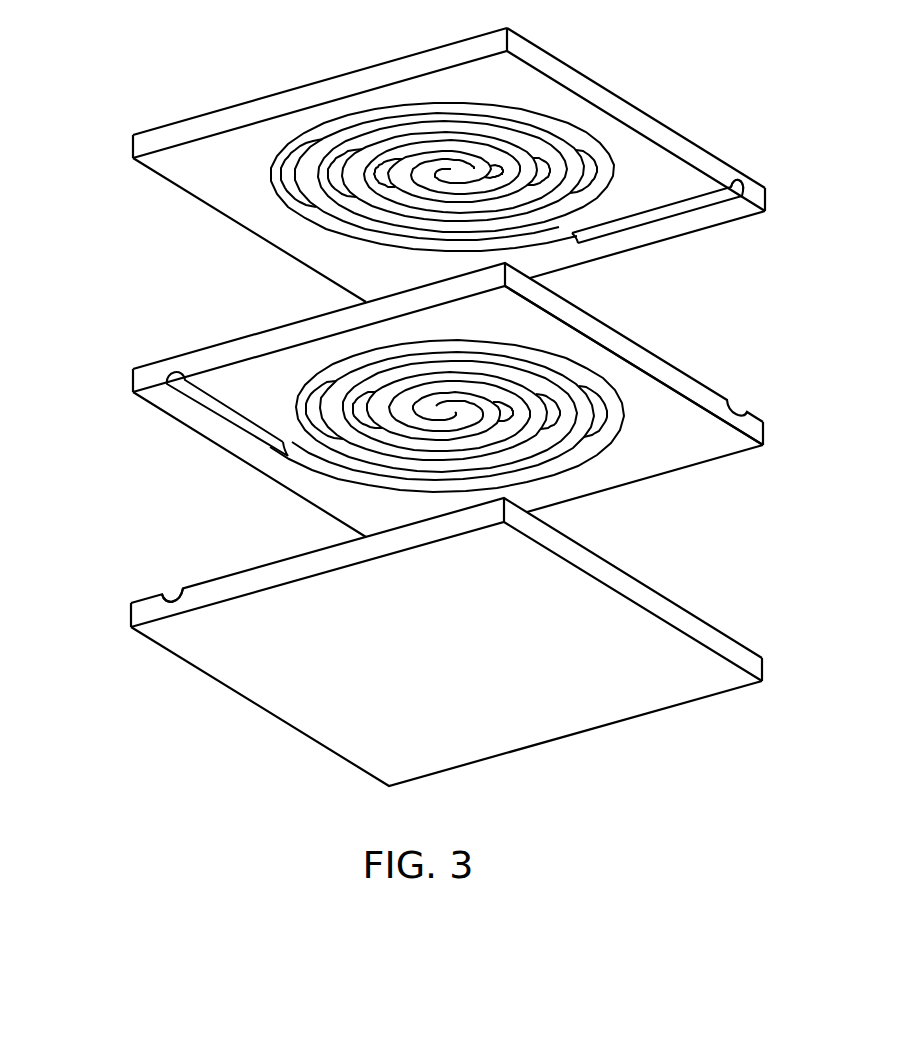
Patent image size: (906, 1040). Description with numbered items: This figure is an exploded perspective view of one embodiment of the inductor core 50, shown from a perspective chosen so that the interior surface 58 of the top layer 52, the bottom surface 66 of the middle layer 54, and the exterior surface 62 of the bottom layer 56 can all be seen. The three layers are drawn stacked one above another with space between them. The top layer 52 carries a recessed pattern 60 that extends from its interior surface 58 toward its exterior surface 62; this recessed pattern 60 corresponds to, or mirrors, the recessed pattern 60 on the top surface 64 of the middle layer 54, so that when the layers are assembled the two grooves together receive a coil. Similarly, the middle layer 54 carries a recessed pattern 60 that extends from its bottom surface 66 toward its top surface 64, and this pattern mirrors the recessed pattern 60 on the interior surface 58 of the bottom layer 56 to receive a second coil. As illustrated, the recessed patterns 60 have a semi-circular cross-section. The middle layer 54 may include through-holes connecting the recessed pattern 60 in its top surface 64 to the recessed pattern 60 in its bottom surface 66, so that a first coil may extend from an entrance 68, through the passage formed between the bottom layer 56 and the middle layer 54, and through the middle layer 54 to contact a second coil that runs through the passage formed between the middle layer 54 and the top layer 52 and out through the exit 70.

The core 50 is at (66, 122).
The top layer 52 is at (680, 128).
The middle layer 54 is at (718, 382).
The bottom layer 56 is at (735, 632).
The interior surface 58 is at (192, 168).
The recessed pattern 60 is at (292, 212).
The exterior surface 62 is at (617, 76).
The top surface 64 is at (678, 333).
The bottom surface 66 is at (688, 453).
The entrance 68 is at (168, 582).
The exit 70 is at (737, 197).